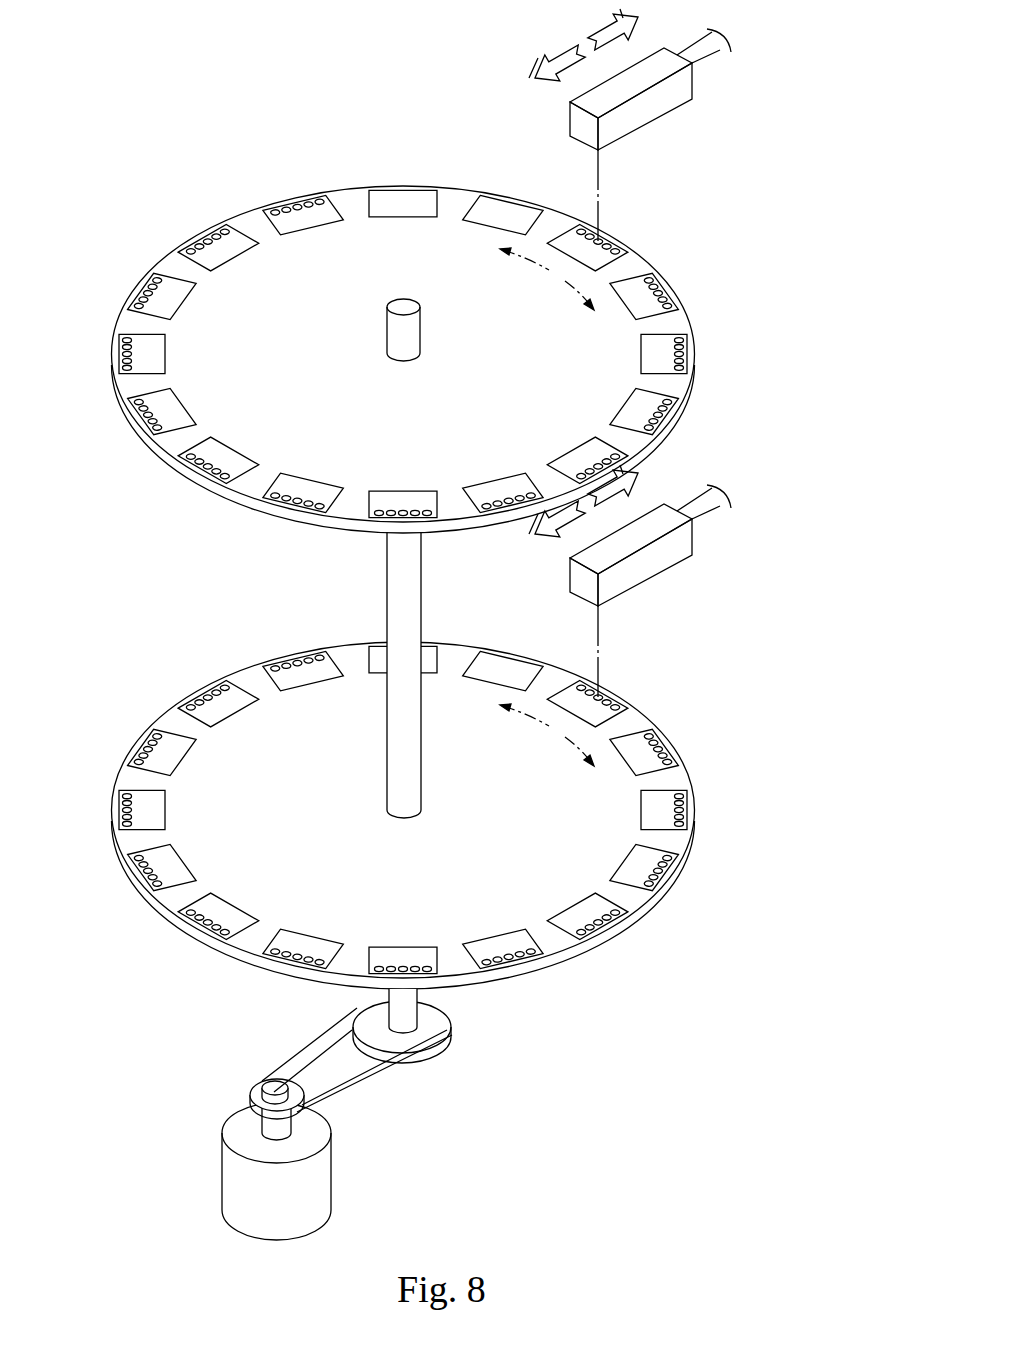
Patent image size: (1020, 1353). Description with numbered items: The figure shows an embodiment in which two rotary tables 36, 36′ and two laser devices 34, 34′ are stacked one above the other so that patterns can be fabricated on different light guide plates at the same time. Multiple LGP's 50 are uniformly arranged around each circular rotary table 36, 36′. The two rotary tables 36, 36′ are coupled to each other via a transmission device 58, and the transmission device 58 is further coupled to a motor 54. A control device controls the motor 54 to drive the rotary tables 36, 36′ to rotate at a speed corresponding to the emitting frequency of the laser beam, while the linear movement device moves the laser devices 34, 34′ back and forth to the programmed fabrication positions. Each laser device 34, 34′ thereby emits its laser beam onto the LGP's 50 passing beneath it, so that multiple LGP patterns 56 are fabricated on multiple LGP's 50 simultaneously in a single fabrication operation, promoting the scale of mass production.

The laser device 34′ is at (650, 97).
The laser device 34 is at (647, 558).
The LGP 50 is at (620, 242).
The LGP pattern 56 is at (652, 418).
The rotary table 36′ is at (190, 477).
The rotary table 36 is at (560, 955).
The motor 54 is at (253, 1195).
The transmission device 58 is at (498, 1083).